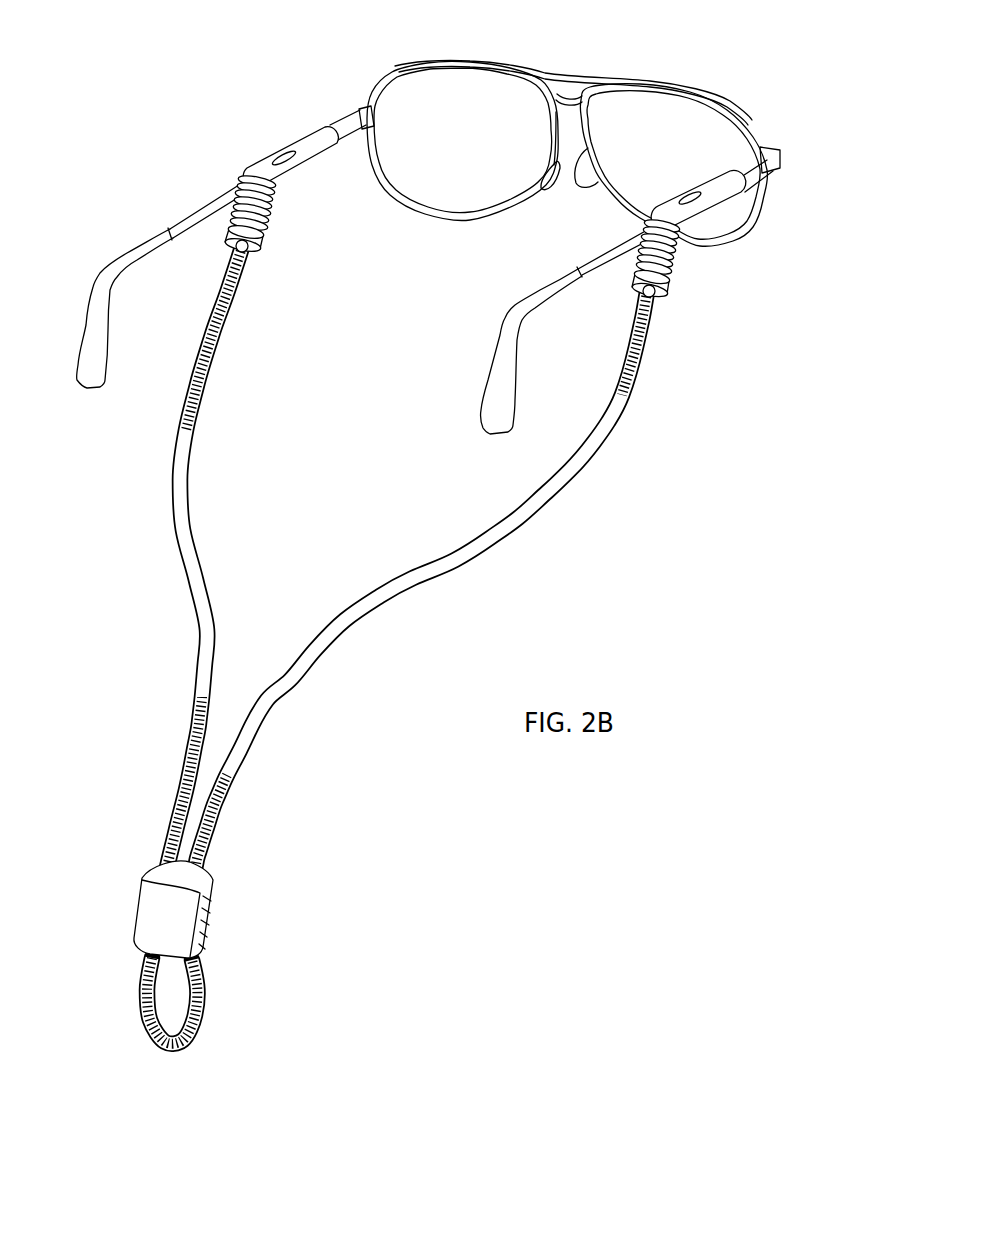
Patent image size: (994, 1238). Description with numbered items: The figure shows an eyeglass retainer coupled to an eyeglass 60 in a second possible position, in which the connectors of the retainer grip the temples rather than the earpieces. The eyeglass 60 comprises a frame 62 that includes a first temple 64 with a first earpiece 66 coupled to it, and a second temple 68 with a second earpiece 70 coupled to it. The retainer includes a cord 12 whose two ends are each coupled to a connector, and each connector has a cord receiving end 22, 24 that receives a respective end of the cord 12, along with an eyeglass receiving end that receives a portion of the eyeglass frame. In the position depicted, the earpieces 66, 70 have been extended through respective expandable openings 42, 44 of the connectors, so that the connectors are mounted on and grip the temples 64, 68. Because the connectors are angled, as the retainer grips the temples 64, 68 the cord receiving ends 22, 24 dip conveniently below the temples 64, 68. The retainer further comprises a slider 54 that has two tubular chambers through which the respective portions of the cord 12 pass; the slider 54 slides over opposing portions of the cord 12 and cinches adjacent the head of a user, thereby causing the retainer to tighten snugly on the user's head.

The cord 12 is at (392, 580).
The cord receiving end 22 is at (662, 281).
The cord receiving end 24 is at (252, 234).
The expandable opening 42 is at (690, 188).
The expandable opening 44 is at (277, 148).
The slider 54 is at (226, 911).
The eyeglass 60 is at (403, 226).
The frame 62 is at (632, 57).
The first temple 64 is at (584, 297).
The first earpiece 66 is at (493, 381).
The second temple 68 is at (196, 249).
The second earpiece 70 is at (99, 310).